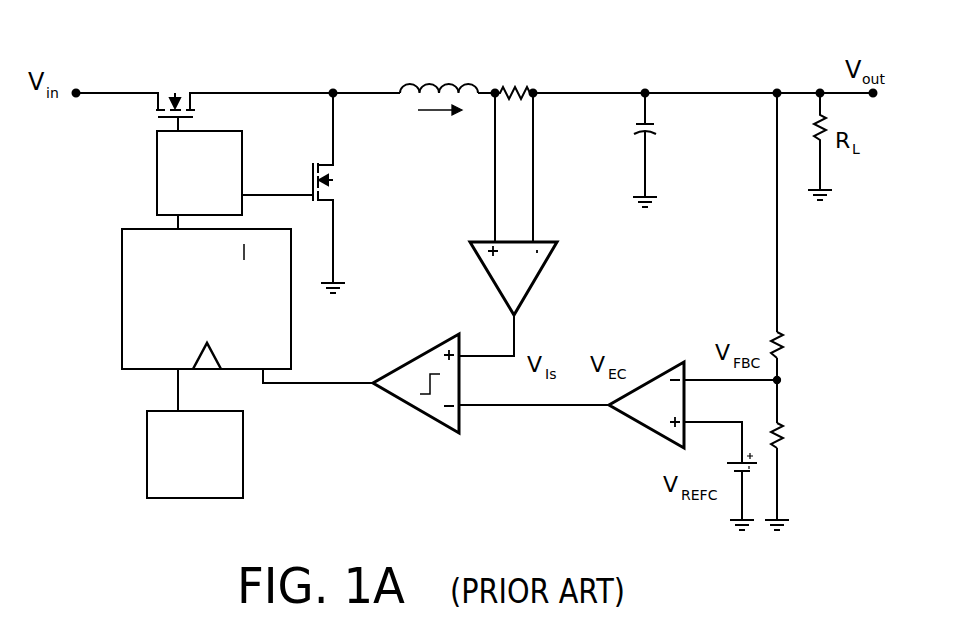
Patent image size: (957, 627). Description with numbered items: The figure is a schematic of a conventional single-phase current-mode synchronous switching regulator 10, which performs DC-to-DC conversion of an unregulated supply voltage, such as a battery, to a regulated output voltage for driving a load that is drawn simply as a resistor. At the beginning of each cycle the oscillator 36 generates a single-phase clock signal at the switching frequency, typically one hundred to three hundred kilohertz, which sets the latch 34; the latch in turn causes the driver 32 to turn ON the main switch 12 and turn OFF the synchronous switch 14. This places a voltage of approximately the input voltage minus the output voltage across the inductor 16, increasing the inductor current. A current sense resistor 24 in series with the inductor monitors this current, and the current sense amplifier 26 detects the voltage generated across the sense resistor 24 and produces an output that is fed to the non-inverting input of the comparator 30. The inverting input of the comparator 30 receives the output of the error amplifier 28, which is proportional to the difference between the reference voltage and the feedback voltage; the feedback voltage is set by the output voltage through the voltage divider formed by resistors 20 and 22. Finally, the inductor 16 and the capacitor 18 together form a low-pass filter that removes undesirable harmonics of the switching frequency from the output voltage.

The single-phase current-mode synchronous switching regulator 10 is at (636, 52).
The main switch 12 is at (175, 96).
The synchronous switch 14 is at (342, 193).
The inductor 16 is at (439, 100).
The capacitor 18 is at (663, 150).
The voltage divider resistor 20 is at (797, 346).
The voltage divider resistor 22 is at (797, 437).
The current sense resistor 24 is at (514, 75).
The current sense amplifier 26 is at (532, 292).
The error amplifier 28 is at (637, 425).
The comparator 30 is at (437, 422).
The driver 32 is at (157, 193).
The latch 34 is at (122, 353).
The oscillator 36 is at (147, 455).